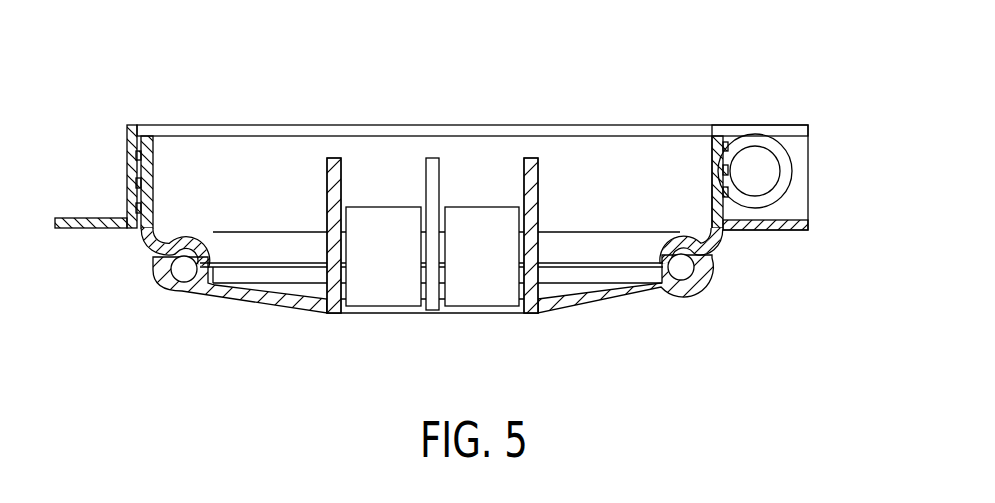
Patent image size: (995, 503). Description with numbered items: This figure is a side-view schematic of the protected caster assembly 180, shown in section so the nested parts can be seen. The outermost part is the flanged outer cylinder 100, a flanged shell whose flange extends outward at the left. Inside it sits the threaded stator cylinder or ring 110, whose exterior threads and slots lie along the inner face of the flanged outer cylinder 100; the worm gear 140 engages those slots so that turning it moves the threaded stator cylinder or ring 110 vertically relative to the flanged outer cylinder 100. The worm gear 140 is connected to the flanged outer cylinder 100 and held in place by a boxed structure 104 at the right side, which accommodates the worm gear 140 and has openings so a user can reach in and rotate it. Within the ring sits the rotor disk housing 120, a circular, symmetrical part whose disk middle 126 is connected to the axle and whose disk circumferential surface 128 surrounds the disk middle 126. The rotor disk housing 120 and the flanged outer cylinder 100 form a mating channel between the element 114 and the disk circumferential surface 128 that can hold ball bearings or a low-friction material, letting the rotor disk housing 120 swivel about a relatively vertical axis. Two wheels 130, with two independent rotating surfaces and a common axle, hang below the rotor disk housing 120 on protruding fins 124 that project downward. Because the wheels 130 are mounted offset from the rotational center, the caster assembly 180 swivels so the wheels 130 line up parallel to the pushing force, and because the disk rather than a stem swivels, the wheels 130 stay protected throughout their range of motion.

The flanged outer cylinder 100 is at (127, 202).
The boxed structure 104 is at (800, 187).
The threaded stator cylinder or ring 110 is at (153, 242).
The mating channel element 114 is at (705, 250).
The rotor disk housing 120 is at (230, 293).
The protruding fins 124 is at (332, 190).
The disk middle 126 is at (305, 290).
The disk circumferential surface 128 is at (680, 268).
The wheels 130 is at (393, 290).
The worm gear 140 is at (757, 162).
The protected caster assembly 180 is at (138, 86).